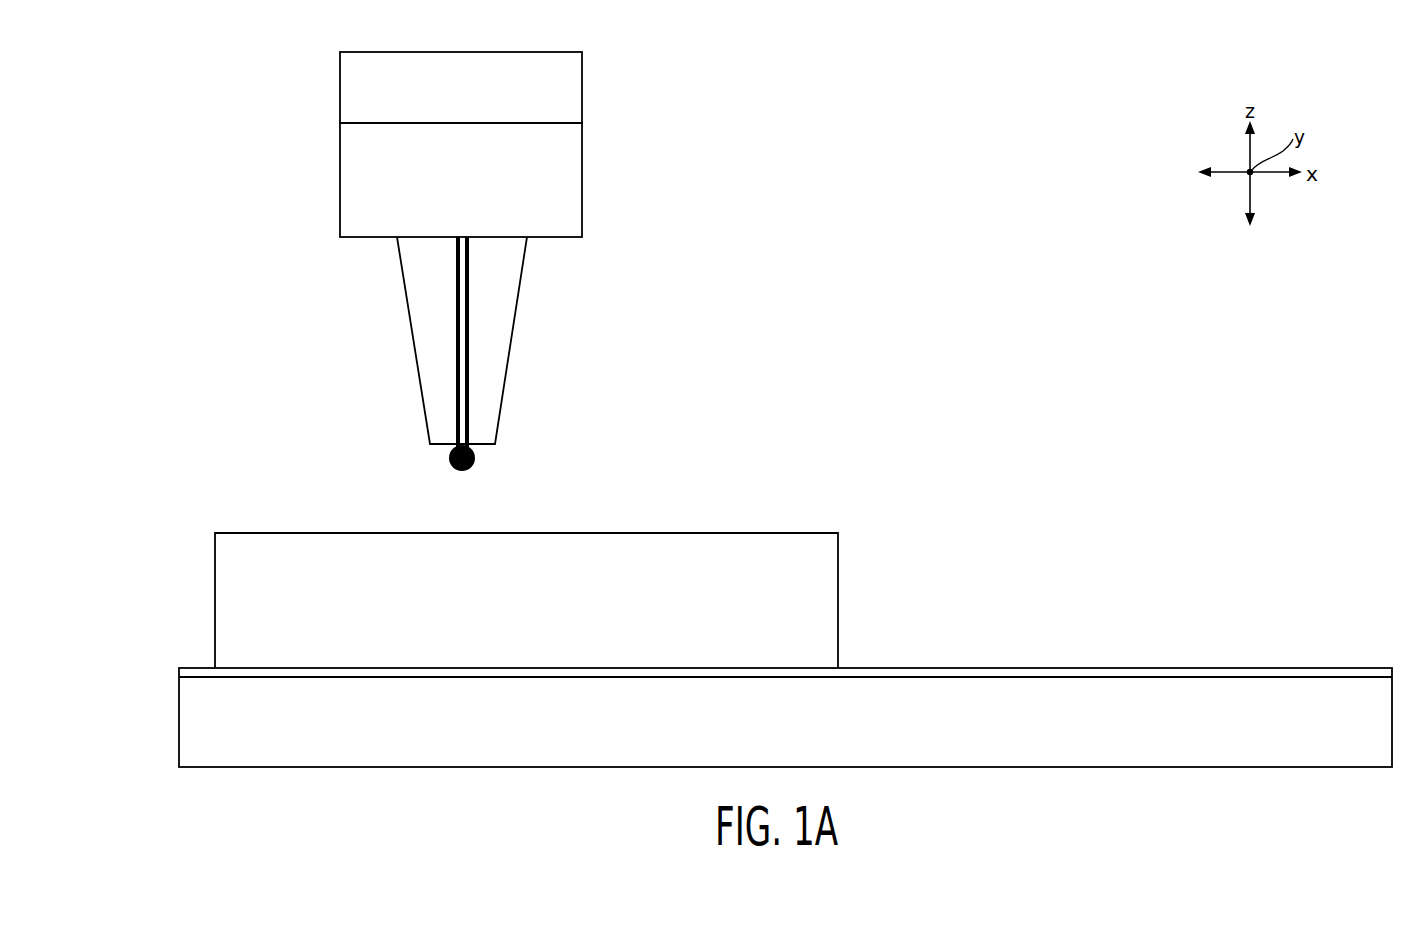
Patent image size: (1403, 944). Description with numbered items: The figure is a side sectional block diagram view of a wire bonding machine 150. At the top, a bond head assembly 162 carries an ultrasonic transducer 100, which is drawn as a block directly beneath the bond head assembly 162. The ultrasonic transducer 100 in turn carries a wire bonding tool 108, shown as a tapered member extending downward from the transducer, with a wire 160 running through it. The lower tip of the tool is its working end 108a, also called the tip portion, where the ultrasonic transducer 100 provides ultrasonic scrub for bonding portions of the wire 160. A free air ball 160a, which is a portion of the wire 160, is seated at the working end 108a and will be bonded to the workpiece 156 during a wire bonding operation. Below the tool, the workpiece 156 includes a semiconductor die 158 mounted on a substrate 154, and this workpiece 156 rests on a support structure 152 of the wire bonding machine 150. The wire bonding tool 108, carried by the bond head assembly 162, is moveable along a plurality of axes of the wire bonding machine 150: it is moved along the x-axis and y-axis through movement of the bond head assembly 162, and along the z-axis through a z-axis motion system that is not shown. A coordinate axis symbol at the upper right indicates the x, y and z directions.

The bond head assembly 162 is at (444, 111).
The ultrasonic transducer 100 is at (444, 216).
The wire bonding tool 108 is at (503, 410).
The working end 108a is at (430, 444).
The wire 160 is at (466, 335).
The free air ball 160a is at (475, 466).
The wire bonding machine 150 is at (156, 413).
The workpiece 156 is at (199, 645).
The semiconductor die 158 is at (548, 620).
The substrate 154 is at (1270, 668).
The support structure 152 is at (797, 743).